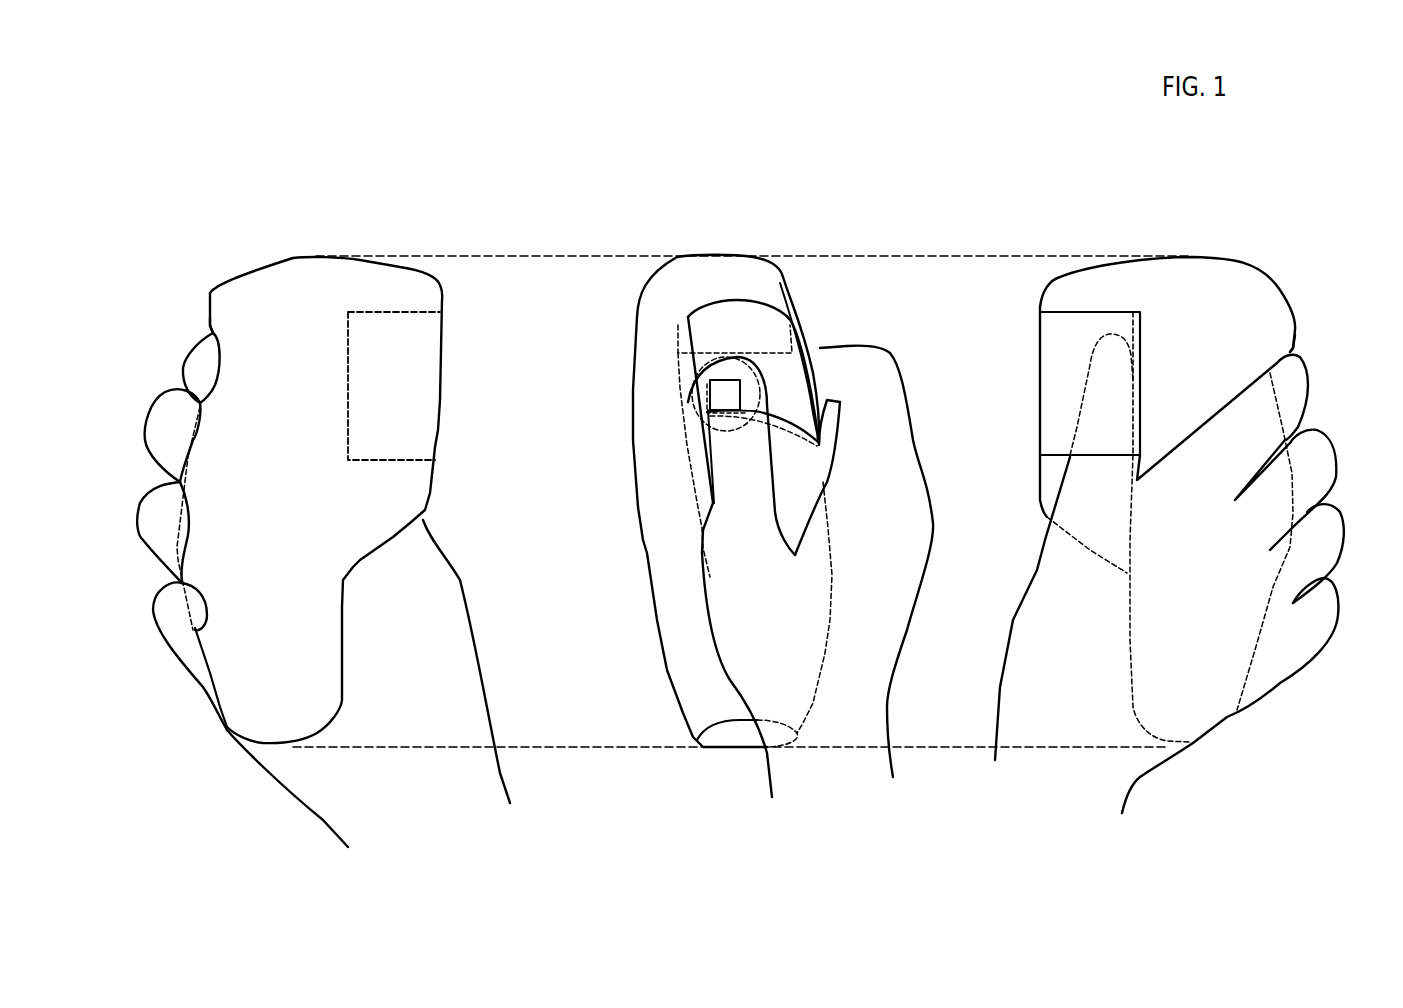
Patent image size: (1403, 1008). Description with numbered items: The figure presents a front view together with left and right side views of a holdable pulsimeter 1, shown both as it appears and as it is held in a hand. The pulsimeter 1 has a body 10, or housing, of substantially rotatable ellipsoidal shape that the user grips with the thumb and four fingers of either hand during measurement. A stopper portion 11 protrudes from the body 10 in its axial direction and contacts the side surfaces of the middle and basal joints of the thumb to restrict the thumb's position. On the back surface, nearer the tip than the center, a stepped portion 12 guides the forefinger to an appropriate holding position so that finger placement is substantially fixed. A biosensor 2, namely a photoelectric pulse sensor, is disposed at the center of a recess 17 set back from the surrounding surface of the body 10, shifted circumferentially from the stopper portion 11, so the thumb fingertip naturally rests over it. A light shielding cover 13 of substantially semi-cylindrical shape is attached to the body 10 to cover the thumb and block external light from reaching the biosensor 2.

The holdable pulsimeter 1 is at (777, 197).
The biosensor 2 is at (710, 398).
The body 10 is at (220, 675).
The stopper portion 11 is at (383, 528).
The stepped portion 12 is at (198, 325).
The light shielding cover 13 is at (430, 413).
The recess 17 is at (1141, 373).